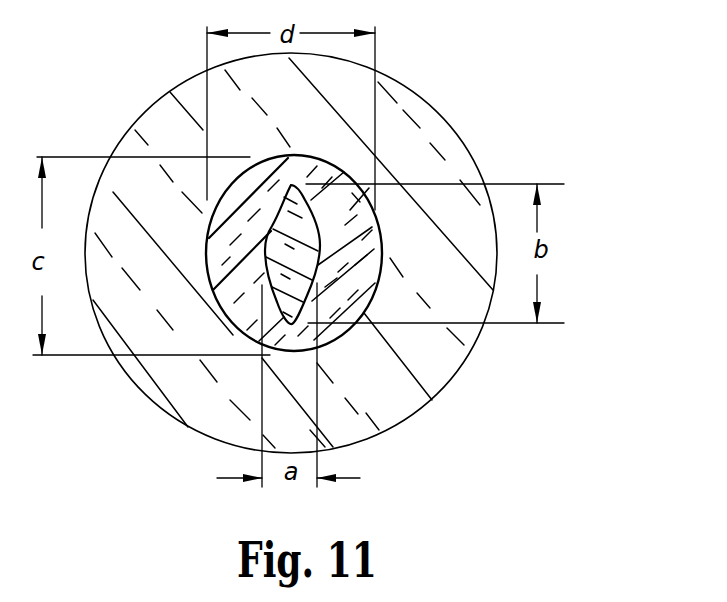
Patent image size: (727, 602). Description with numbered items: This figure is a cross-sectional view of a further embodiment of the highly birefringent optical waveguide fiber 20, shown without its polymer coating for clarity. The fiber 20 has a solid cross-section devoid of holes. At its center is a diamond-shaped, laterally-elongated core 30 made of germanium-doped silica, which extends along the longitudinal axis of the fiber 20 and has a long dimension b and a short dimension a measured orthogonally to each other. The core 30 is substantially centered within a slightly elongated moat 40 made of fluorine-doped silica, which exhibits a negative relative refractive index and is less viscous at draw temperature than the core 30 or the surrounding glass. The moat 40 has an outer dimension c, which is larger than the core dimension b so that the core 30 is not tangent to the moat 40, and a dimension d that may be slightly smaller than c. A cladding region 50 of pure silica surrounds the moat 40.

The optical waveguide fiber 20 is at (463, 87).
The core 30 is at (300, 294).
The moat 40 is at (365, 205).
The cladding 50 is at (168, 128).